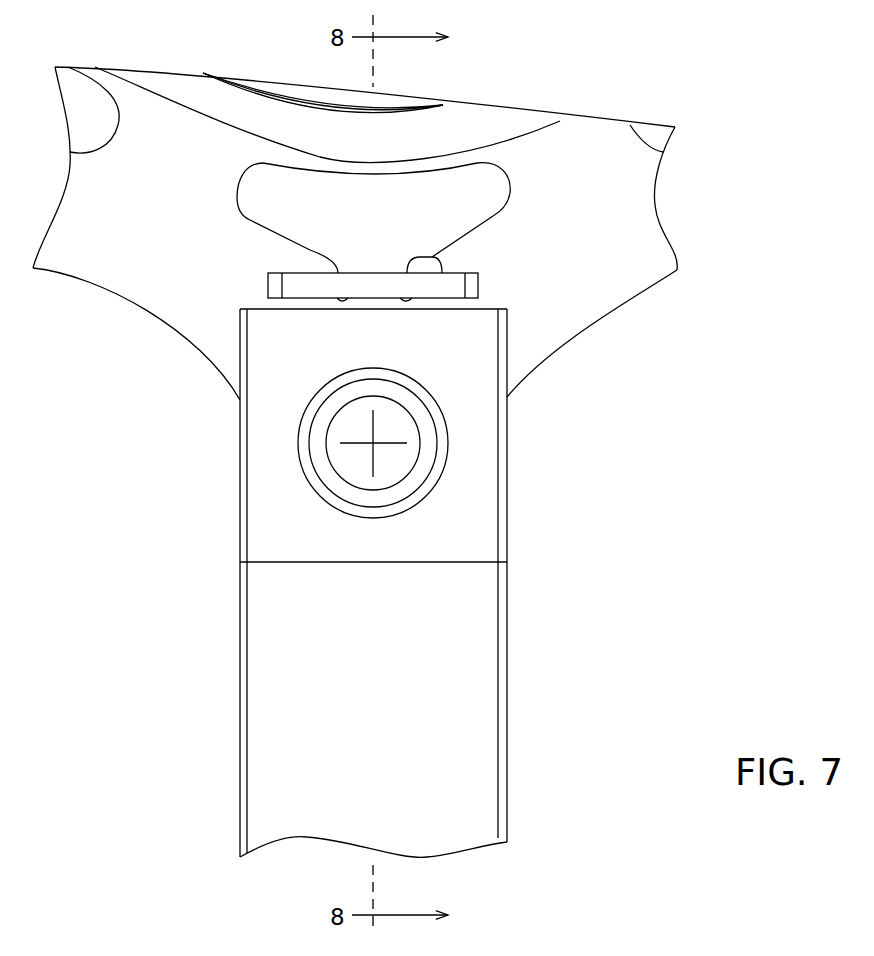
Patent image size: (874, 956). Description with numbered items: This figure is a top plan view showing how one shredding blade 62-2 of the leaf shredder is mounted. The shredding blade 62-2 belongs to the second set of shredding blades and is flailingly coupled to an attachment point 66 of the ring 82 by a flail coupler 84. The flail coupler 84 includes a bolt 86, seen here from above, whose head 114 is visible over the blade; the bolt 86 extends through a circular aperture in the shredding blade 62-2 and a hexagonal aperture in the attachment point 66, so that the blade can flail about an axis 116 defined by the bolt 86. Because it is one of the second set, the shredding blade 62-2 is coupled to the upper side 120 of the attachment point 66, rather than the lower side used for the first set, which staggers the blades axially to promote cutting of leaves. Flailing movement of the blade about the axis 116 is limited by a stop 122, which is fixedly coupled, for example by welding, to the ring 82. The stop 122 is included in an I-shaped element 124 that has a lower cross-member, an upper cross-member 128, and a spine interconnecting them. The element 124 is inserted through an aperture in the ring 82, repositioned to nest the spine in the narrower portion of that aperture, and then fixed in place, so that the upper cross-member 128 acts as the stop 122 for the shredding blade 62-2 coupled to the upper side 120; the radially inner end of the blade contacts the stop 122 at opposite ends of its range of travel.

The second set of shredding blades 62-2 is at (507, 718).
The attachment point 66 is at (223, 375).
The ring 82 is at (638, 262).
The flail coupler 84 is at (328, 517).
The bolt 86 is at (383, 498).
The head 114 is at (410, 483).
The axis 116 is at (373, 437).
The upper side 120 is at (513, 370).
The stop 122 is at (420, 257).
The I-shaped element 124 is at (495, 286).
The upper cross-member 128 is at (294, 246).